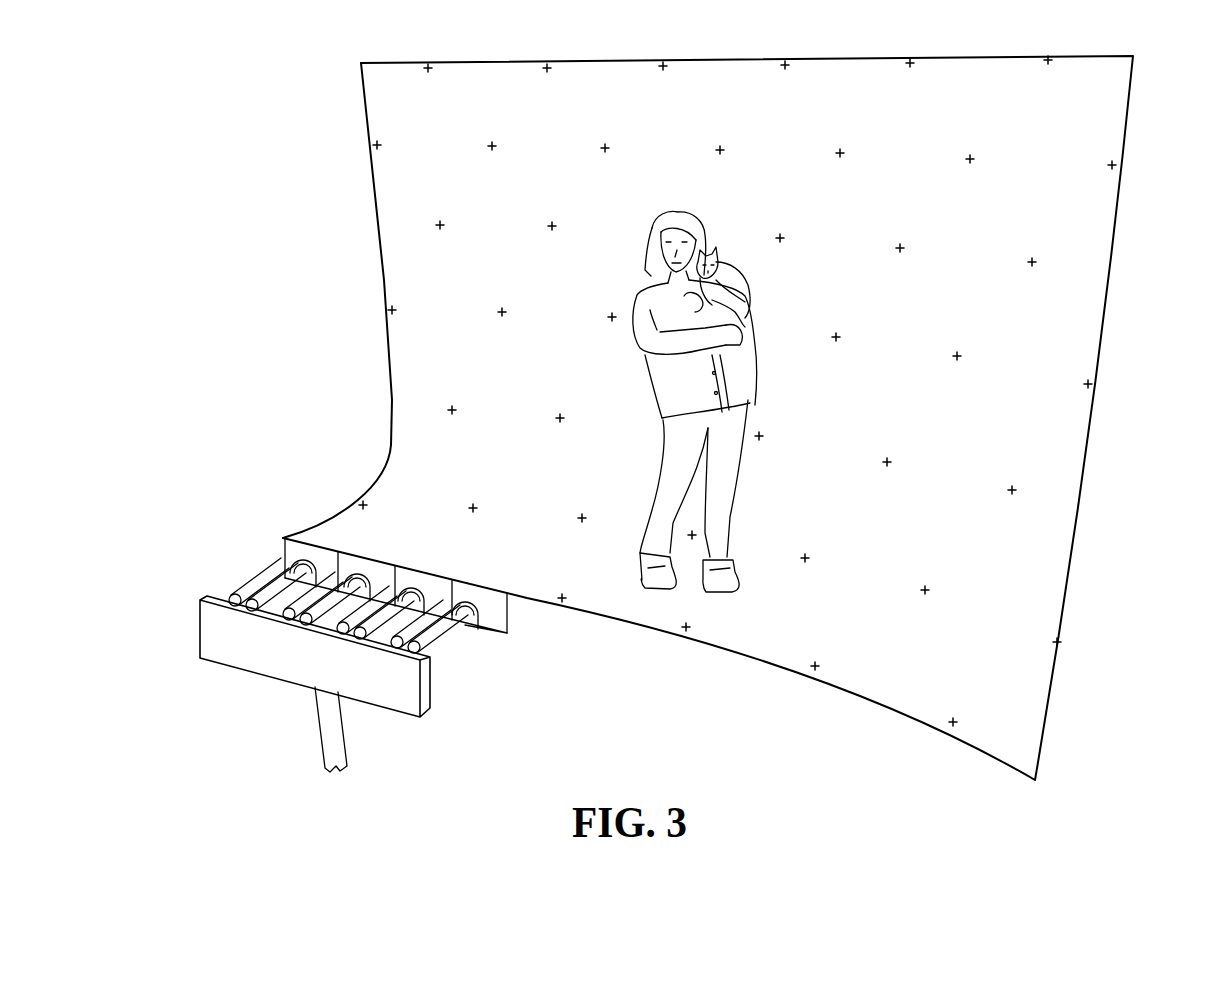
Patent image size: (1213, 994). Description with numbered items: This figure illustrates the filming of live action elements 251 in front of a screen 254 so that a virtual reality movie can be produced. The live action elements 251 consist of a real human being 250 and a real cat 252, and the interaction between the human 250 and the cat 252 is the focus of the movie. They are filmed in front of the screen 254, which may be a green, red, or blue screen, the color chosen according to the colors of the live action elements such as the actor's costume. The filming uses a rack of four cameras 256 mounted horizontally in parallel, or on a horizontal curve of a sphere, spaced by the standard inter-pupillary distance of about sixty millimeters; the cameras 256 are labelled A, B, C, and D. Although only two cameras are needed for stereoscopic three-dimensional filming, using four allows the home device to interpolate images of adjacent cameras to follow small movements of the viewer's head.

The real human being 250 is at (652, 242).
The live action elements 251 is at (780, 284).
The real cat 252 is at (728, 265).
The screen 254 is at (1058, 535).
The rack of four cameras 256 is at (230, 561).